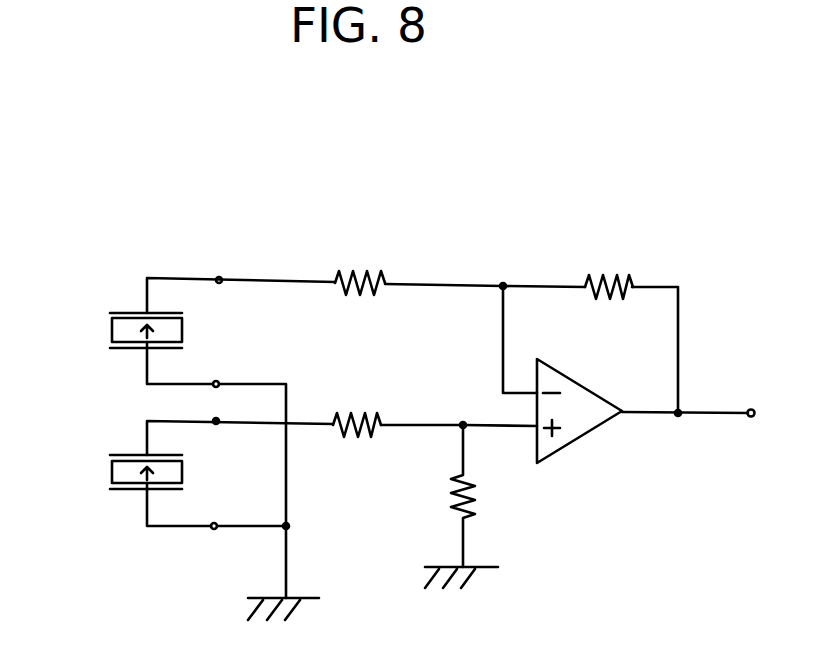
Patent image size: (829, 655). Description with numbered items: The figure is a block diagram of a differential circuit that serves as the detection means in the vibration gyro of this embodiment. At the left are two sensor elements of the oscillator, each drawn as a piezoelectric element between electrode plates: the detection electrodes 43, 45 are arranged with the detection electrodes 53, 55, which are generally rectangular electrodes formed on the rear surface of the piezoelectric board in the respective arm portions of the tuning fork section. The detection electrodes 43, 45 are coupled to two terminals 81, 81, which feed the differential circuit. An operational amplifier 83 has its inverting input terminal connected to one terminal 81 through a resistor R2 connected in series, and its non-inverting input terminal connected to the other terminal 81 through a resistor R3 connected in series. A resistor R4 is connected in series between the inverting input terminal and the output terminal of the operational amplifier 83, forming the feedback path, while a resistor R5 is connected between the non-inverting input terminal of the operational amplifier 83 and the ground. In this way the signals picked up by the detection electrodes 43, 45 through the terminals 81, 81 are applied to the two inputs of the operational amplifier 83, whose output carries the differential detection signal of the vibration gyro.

The detection electrode 43 is at (131, 312).
The detection electrode 53 is at (131, 349).
The detection electrode 45 is at (131, 455).
The detection electrode 55 is at (131, 490).
The terminals 81 is at (219, 280).
The operational amplifier 83 is at (560, 446).
The resistor R2 is at (364, 257).
The resistor R3 is at (362, 451).
The resistor R4 is at (615, 260).
The resistor R5 is at (498, 496).